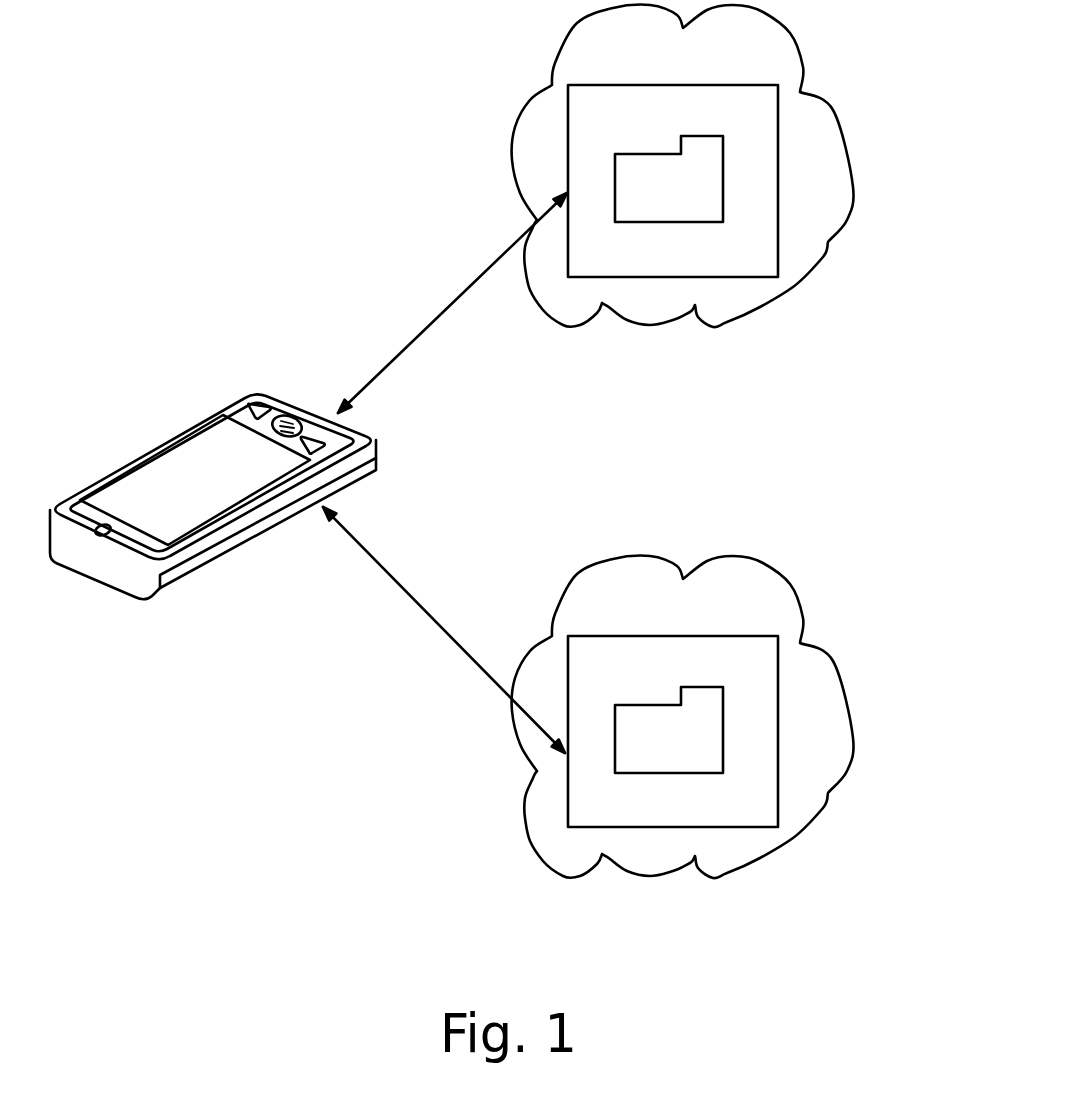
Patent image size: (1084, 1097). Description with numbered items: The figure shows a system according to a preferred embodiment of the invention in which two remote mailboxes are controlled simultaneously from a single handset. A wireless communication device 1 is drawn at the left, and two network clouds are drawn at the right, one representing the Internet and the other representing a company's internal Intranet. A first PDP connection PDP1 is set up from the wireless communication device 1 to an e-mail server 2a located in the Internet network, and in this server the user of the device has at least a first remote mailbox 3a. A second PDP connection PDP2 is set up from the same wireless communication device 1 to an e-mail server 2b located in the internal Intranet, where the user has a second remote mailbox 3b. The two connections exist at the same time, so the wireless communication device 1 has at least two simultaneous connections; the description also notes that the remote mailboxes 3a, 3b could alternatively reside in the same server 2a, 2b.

The wireless communication device 1 is at (157, 438).
The e-mail server 2a is at (740, 278).
The e-mail server 2b is at (597, 636).
The first remote mailbox 3a is at (715, 152).
The second remote mailbox 3b is at (708, 737).
The first PDP connection PDP1 is at (448, 315).
The second PDP connection PDP2 is at (427, 615).